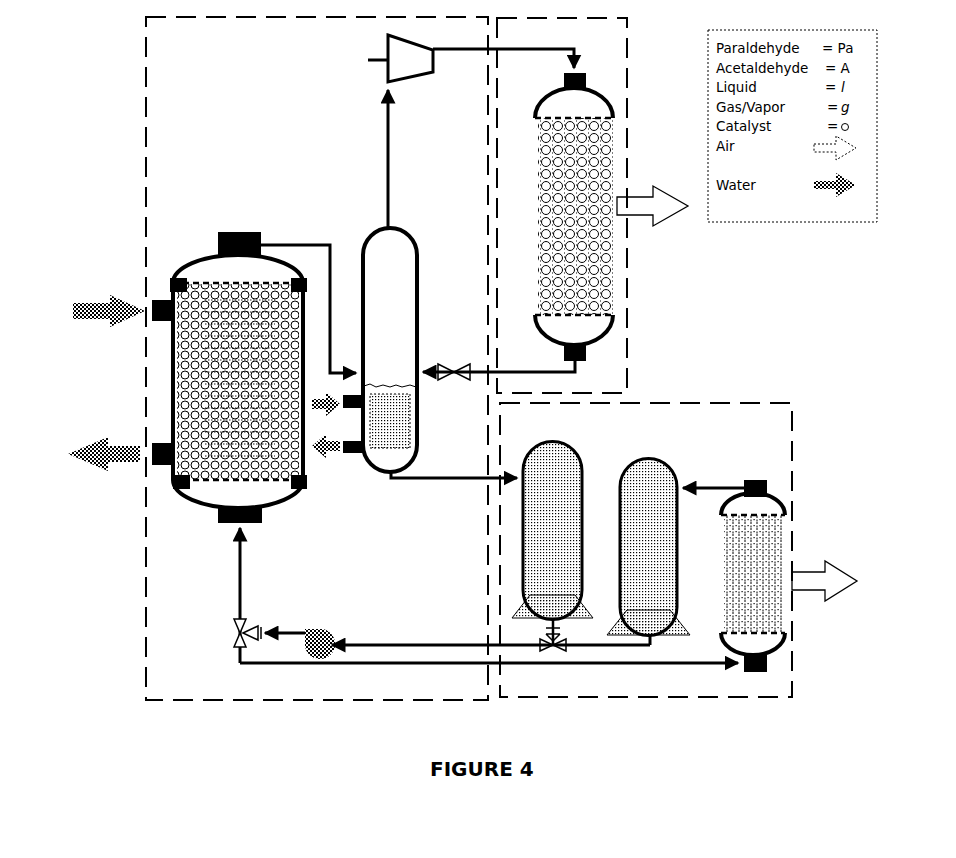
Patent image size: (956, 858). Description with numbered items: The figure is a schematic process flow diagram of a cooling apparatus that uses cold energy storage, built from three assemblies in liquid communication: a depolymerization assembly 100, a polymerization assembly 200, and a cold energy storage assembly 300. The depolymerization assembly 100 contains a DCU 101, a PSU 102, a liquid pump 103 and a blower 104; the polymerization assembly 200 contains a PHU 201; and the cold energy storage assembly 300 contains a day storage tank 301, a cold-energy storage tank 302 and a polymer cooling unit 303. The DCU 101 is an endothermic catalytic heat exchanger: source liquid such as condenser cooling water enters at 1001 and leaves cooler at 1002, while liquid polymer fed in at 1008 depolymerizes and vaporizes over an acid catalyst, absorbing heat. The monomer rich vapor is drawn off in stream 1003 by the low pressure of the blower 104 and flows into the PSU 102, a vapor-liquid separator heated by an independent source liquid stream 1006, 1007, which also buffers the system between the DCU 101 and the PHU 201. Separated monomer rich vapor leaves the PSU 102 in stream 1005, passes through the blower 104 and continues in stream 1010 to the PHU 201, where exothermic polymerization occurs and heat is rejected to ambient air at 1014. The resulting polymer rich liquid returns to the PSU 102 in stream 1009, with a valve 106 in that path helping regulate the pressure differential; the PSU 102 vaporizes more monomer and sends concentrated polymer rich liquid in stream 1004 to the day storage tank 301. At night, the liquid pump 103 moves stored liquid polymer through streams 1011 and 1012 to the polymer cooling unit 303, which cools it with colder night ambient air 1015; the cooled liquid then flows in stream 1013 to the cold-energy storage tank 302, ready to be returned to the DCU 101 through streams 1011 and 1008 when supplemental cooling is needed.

The depolymerization assembly 100 is at (317, 358).
The DCU 101 is at (229, 377).
The PSU 102 is at (380, 350).
The liquid pump 103 is at (300, 629).
The blower 104 is at (400, 58).
The valve 106 is at (454, 362).
The polymerization assembly 200 is at (562, 205).
The PHU 201 is at (561, 217).
The cold energy storage assembly 300 is at (646, 550).
The day storage tank 301 is at (552, 547).
The cold-energy storage tank 302 is at (648, 552).
The polymer cooling unit 303 is at (753, 564).
The source liquid 1001 is at (91, 311).
The source liquid exit 1002 is at (92, 461).
The monomer rich vapor mixture stream 1003 is at (308, 296).
The polymer rich liquid stream 1004 is at (454, 490).
The monomer rich vapor stream 1005 is at (366, 159).
The source liquid stream 1006 is at (331, 415).
The source liquid stream 1007 is at (335, 458).
The polymer feed stream 1008 is at (229, 595).
The polymer rich liquid mixture stream 1009 is at (521, 375).
The monomer rich vapor stream 1010 is at (503, 47).
The liquid polymer stream 1011 is at (491, 633).
The liquid polymer stream 1012 is at (489, 677).
The cooled liquid paraldehyde stream 1013 is at (713, 475).
The heat rejection to ambient 1014 is at (652, 196).
The night ambient air 1015 is at (824, 569).